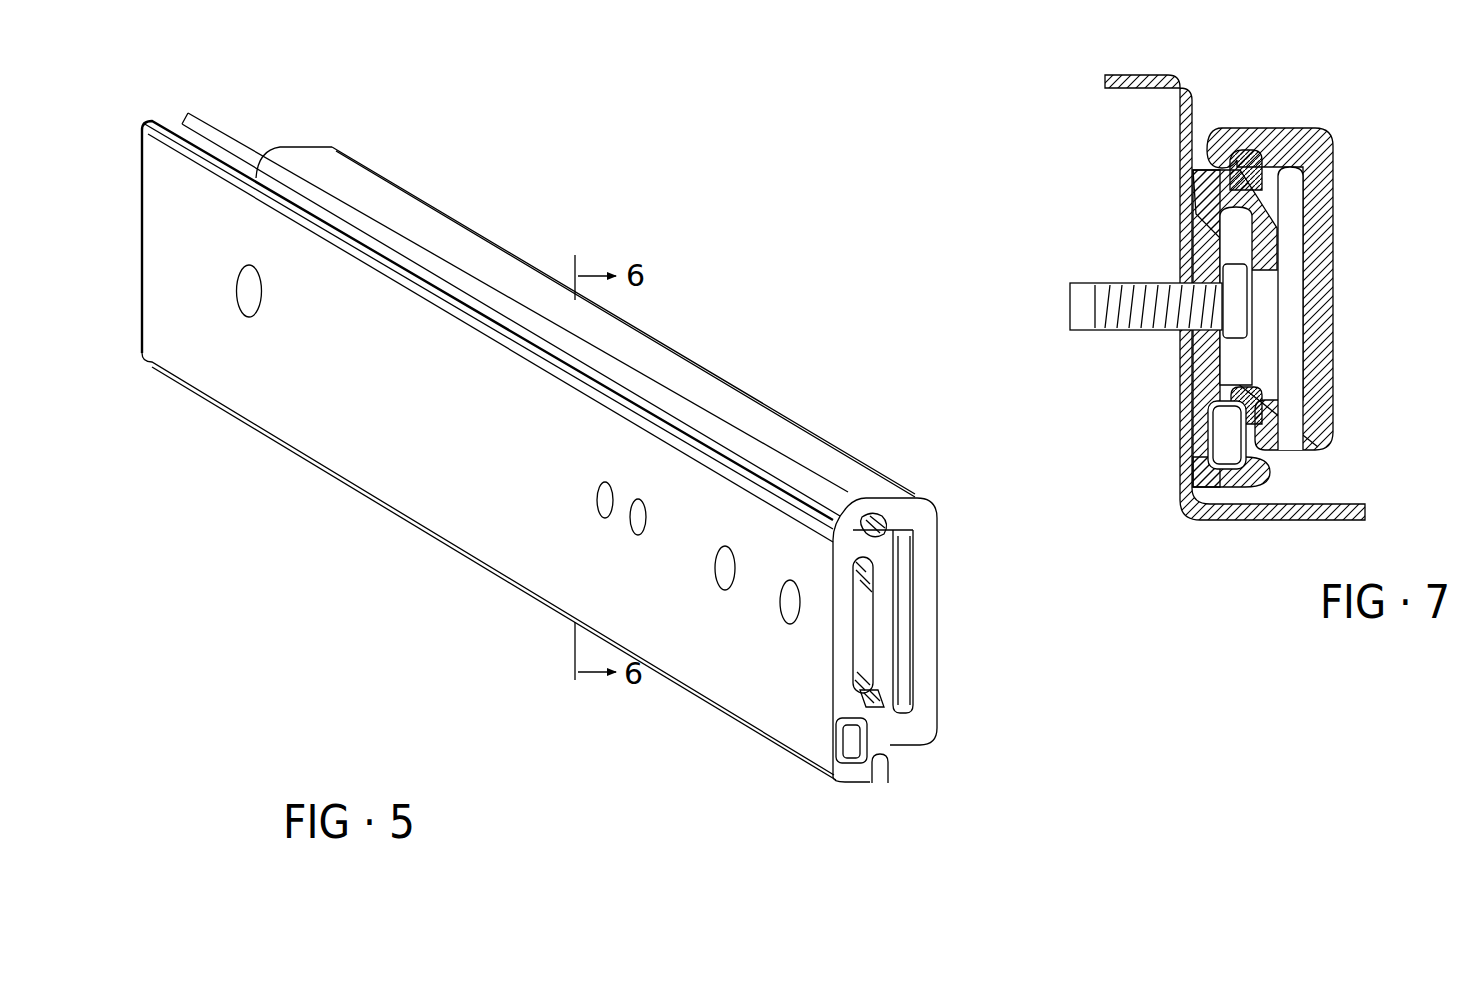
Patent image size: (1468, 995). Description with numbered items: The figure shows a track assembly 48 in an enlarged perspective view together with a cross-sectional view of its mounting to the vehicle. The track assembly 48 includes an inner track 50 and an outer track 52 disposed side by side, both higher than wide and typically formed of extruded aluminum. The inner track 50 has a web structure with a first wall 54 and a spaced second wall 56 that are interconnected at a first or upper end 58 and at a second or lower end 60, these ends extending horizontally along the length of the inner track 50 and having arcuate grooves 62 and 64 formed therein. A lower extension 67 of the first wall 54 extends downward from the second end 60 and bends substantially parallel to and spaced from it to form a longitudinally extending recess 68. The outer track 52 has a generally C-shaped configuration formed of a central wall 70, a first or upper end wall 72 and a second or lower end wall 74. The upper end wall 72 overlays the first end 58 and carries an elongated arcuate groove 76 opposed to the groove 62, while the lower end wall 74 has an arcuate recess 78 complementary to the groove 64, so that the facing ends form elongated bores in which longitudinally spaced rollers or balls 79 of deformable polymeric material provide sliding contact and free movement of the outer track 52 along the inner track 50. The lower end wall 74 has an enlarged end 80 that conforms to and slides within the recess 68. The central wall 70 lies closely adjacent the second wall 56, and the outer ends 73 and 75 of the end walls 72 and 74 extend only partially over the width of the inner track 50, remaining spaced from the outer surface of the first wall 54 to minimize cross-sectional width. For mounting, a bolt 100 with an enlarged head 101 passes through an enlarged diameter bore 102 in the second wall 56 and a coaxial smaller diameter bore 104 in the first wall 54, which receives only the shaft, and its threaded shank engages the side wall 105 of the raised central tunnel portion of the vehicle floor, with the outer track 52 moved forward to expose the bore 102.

In FIG. 5, the track assembly 48 is at (678, 172).
In FIG. 7, the track assembly 48 is at (1354, 128).
In FIG. 5, the inner track 50 is at (286, 427).
In FIG. 7, the inner track 50 is at (1287, 160).
In FIG. 5, the outer track 52 is at (447, 212).
In FIG. 7, the outer track 52 is at (1318, 160).
In FIG. 5, the first wall 54 is at (840, 641).
In FIG. 7, the first wall 54 is at (1212, 186).
In FIG. 5, the second wall 56 is at (890, 626).
In FIG. 7, the second wall 56 is at (1270, 248).
In FIG. 5, the first end 58 is at (836, 551).
In FIG. 5, the second end 60 is at (882, 699).
In FIG. 5, the arcuate groove 62 is at (888, 524).
In FIG. 5, the arcuate groove 64 is at (858, 716).
In FIG. 5, the lower extension 67 is at (842, 734).
In FIG. 5, the recess 68 is at (848, 760).
In FIG. 5, the central wall 70 is at (930, 556).
In FIG. 7, the central wall 70 is at (1328, 262).
In FIG. 5, the first end wall 72 is at (876, 520).
In FIG. 5, the outer end 73 is at (838, 520).
In FIG. 7, the outer end 73 is at (1232, 153).
In FIG. 5, the second end wall 74 is at (912, 745).
In FIG. 5, the outer end 75 is at (878, 784).
In FIG. 7, the outer end 75 is at (1208, 446).
In FIG. 5, the arcuate groove 76 is at (868, 522).
In FIG. 5, the arcuate recess 78 is at (880, 732).
In FIG. 7, the rollers or balls 79 is at (1233, 157).
In FIG. 5, the enlarged end 80 is at (845, 722).
In FIG. 7, the bolt 100 is at (1062, 281).
In FIG. 7, the head 101 is at (1228, 272).
In FIG. 7, the enlarged diameter bore 102 is at (1270, 326).
In FIG. 7, the smaller diameter bore 104 is at (1182, 320).
In FIG. 7, the side wall 105 is at (1186, 416).